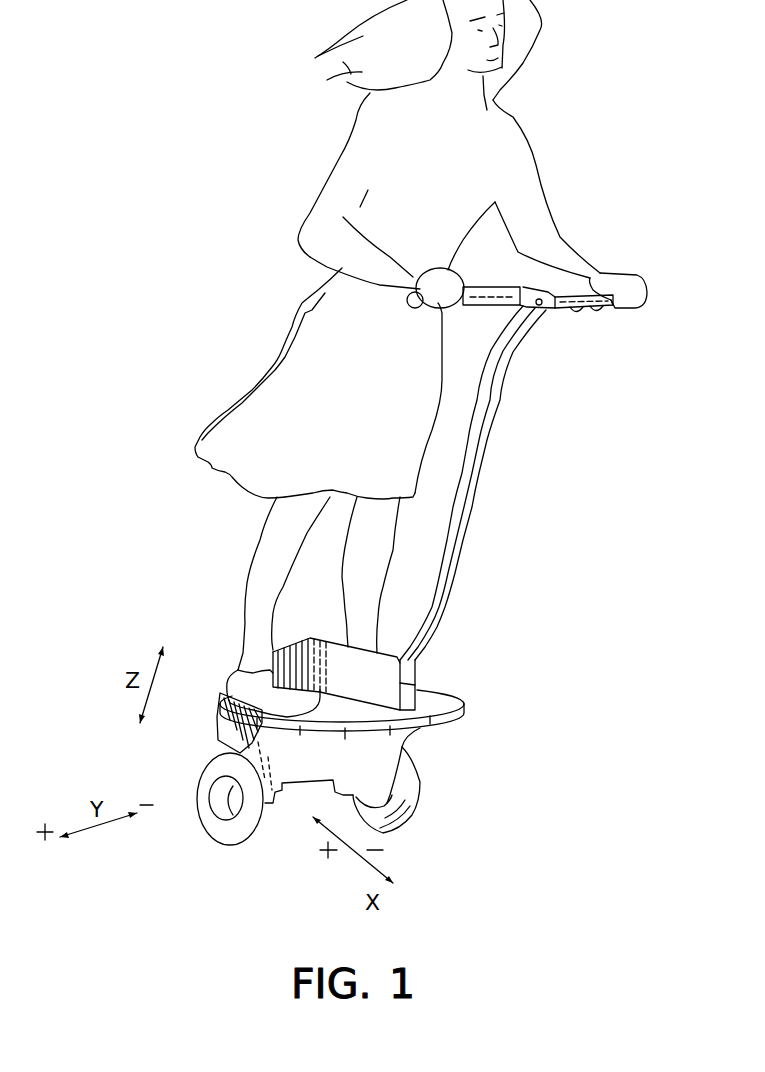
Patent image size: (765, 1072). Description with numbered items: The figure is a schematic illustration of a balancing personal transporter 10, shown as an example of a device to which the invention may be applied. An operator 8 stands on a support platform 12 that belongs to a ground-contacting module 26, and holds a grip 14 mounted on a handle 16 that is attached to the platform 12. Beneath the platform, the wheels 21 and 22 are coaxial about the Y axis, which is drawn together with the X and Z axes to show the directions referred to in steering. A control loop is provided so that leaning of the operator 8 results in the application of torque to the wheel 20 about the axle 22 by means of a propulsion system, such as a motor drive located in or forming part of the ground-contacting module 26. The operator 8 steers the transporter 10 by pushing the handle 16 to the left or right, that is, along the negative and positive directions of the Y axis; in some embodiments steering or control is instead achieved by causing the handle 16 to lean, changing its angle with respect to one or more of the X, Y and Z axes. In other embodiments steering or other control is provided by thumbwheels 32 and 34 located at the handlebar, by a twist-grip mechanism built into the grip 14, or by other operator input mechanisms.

The operator 8 is at (520, 140).
The balancing personal transporter 10 is at (187, 323).
The support platform 12 is at (467, 710).
The grip 14 is at (550, 313).
The handle 16 is at (477, 458).
The wheel 20 is at (408, 805).
The wheel 21 is at (213, 827).
The wheel / axle 22 is at (378, 790).
The ground-contacting module 26 is at (440, 758).
The thumbwheel 32 is at (609, 309).
The thumbwheel 34 is at (580, 313).